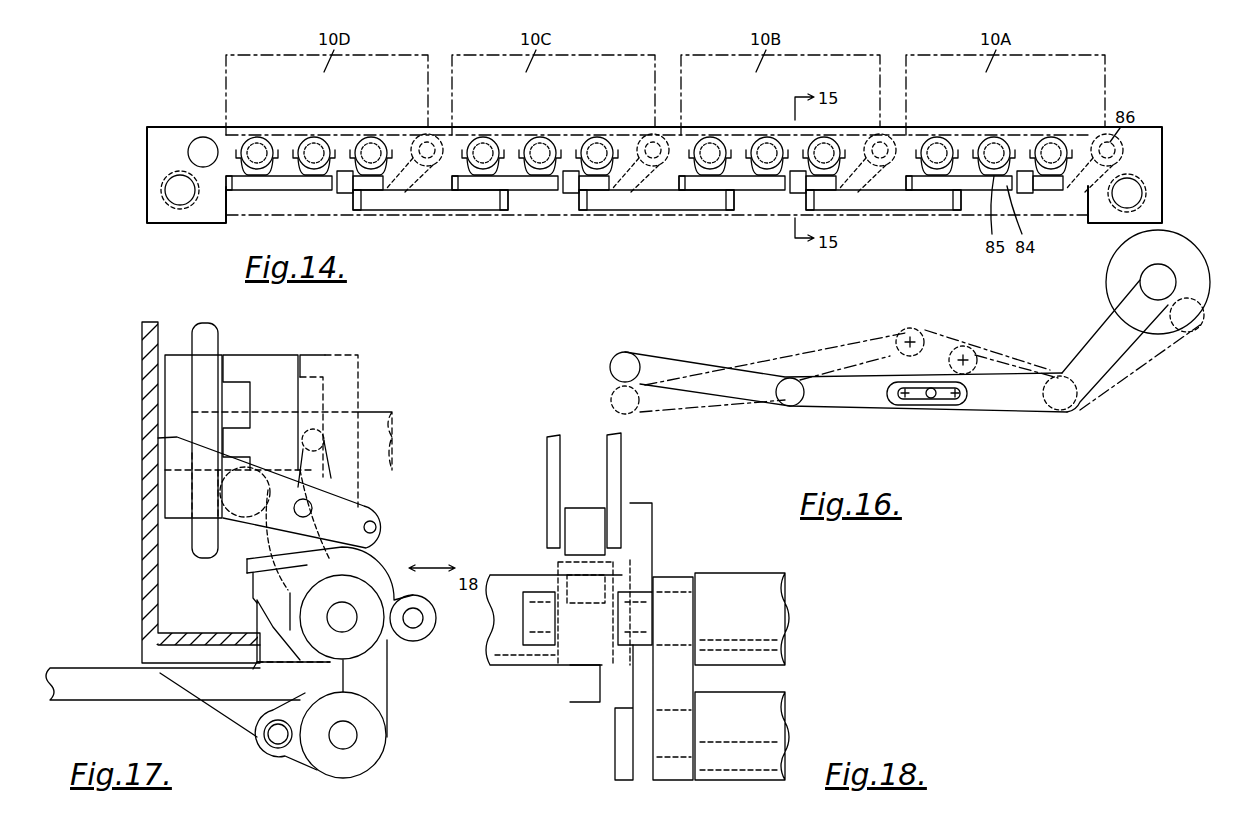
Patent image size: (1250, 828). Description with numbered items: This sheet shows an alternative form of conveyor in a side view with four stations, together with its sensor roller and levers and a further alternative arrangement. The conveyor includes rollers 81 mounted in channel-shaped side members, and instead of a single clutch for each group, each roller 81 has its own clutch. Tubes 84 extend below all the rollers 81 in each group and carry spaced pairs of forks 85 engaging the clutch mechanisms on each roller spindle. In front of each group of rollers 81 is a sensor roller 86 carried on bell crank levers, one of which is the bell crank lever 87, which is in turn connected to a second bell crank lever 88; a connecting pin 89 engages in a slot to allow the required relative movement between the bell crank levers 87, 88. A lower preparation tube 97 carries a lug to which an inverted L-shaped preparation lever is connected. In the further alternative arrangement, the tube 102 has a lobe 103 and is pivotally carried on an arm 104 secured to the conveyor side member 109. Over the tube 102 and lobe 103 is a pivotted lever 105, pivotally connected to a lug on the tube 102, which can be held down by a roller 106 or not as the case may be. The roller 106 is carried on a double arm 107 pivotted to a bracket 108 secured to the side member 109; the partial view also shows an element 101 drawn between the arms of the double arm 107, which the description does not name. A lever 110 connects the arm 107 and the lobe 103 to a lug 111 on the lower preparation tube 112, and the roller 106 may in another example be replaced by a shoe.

In FIG. 14, the rollers 81 is at (1054, 139).
In FIG. 14, the tubes 84 is at (755, 190).
In FIG. 14, the forks 85 is at (752, 168).
In FIG. 14, the sensor roller 86 is at (884, 132).
In FIG. 16, the sensor roller 86 is at (1188, 252).
In FIG. 16, the bell crank lever 87 is at (1112, 327).
In FIG. 16, the second bell crank lever 88 is at (708, 375).
In FIG. 16, the connecting pin 89 is at (933, 395).
In FIG. 14, the preparation tube 97 is at (884, 202).
In FIG. 18, the block 101 is at (578, 528).
In FIG. 17, the tube 102 is at (365, 640).
In FIG. 18, the tube 102 is at (505, 576).
In FIG. 17, the lobe 103 is at (265, 593).
In FIG. 17, the arm 104 is at (160, 702).
In FIG. 17, the pivotted lever 105 is at (375, 555).
In FIG. 18, the pivotted lever 105 is at (560, 567).
In FIG. 17, the roller 106 is at (390, 517).
In FIG. 17, the double arm 107 is at (360, 500).
In FIG. 18, the double arm 107 is at (547, 477).
In FIG. 17, the bracket 108 is at (175, 448).
In FIG. 17, the side member 109 is at (145, 545).
In FIG. 17, the lever 110 is at (270, 618).
In FIG. 18, the lever 110 is at (635, 700).
In FIG. 17, the lug 111 is at (287, 753).
In FIG. 17, the preparation tube 112 is at (376, 732).
In FIG. 18, the preparation tube 112 is at (773, 734).